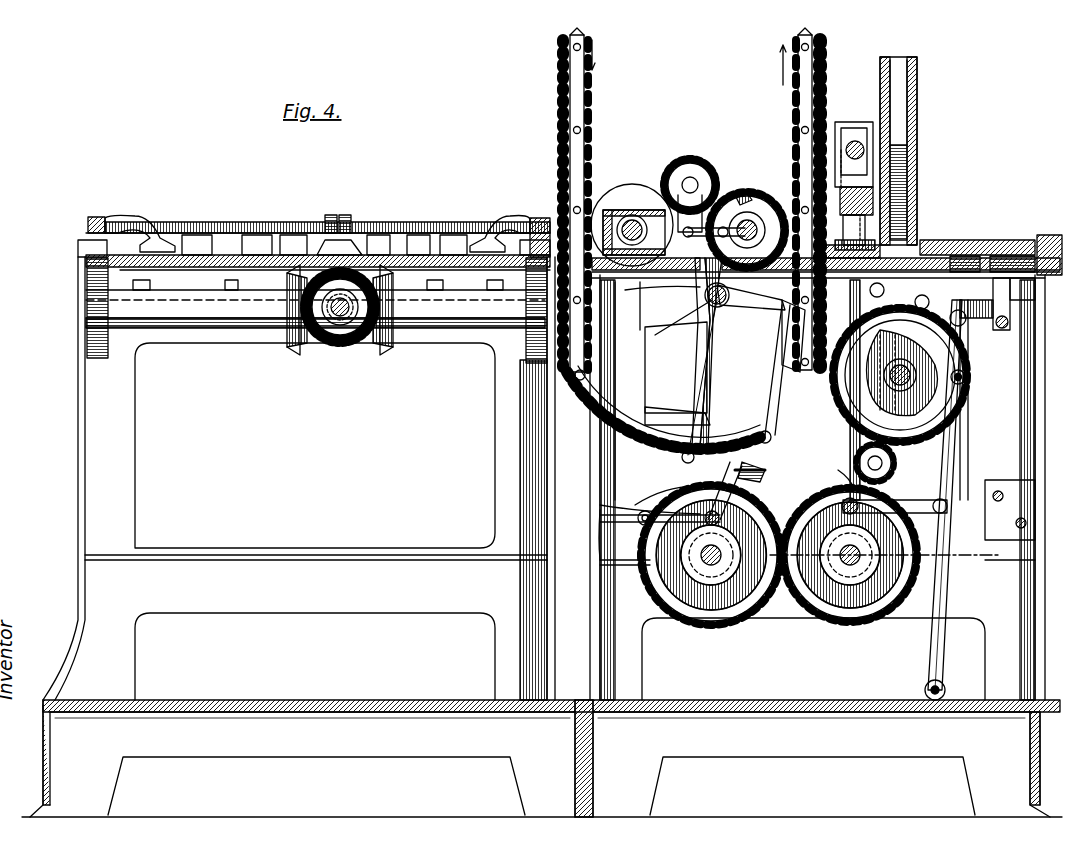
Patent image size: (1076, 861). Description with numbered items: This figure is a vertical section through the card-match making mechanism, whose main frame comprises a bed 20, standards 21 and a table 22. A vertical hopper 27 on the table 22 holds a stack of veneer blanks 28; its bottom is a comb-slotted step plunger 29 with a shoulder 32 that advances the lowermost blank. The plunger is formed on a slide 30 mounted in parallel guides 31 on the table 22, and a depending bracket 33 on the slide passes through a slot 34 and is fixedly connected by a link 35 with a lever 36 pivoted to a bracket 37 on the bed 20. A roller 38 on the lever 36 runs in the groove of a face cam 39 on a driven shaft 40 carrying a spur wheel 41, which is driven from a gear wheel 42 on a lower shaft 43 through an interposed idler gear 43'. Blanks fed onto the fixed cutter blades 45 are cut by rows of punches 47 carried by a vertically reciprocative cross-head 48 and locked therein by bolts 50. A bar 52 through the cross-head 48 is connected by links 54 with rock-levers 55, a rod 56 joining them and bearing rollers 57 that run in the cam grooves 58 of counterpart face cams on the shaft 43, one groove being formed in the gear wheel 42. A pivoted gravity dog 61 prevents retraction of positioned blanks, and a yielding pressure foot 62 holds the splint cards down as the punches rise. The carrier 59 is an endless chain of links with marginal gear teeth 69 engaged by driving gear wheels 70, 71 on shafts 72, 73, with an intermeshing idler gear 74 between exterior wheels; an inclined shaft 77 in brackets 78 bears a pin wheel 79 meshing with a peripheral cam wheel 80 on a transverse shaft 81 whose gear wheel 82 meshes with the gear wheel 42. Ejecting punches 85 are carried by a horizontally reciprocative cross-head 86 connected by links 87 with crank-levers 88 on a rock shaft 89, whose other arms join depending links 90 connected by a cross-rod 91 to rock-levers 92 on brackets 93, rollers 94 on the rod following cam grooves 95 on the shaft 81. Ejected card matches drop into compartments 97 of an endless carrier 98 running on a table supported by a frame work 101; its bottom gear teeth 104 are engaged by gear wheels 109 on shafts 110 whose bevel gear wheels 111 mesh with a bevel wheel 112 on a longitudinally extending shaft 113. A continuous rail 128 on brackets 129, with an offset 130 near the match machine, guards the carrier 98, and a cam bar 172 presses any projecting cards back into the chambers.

The bed 20 is at (542, 758).
The standards 21 is at (817, 487).
The table 22 is at (1055, 240).
The vertical hopper 27 is at (917, 102).
The veneer blanks 28 is at (898, 148).
The step plunger 29 is at (905, 257).
The slide 30 is at (945, 242).
The parallel guides 31 is at (1035, 260).
The shoulder 32 is at (902, 265).
The depending bracket 33 is at (1005, 305).
The slot 34 is at (965, 262).
The link 35 is at (990, 312).
The lever 36 is at (962, 440).
The bracket 37 is at (925, 690).
The roller 38 is at (940, 397).
The face cam 39 is at (900, 375).
The driven shaft 40 is at (912, 360).
The spur wheel 41 is at (838, 395).
The gear wheel 42 is at (880, 595).
The lower shaft 43 is at (827, 592).
The idler gear 43' is at (946, 495).
The cutter blades 45 is at (808, 278).
The punches 47 is at (862, 222).
The cross-head 48 is at (884, 130).
The bolts 50 is at (875, 195).
The bar 52 is at (857, 135).
The links 54 is at (858, 458).
The rock-levers 55 is at (910, 500).
The rod 56 is at (885, 539).
The rollers 57 is at (831, 481).
The cam grooves 58 is at (865, 590).
The carrier 59 is at (565, 92).
The gravity dog 61 is at (870, 245).
The yielding pressure foot 62 is at (793, 212).
The gear teeth 69 is at (585, 100).
The driving gear wheel 70 is at (748, 200).
The driving gear wheel 71 is at (637, 207).
The shaft 72 is at (760, 212).
The shaft 73 is at (656, 391).
The idler gear 74 is at (692, 165).
The inclined shaft 77 is at (713, 363).
The brackets 78 is at (681, 377).
The pin wheel 79 is at (752, 474).
The peripheral cam wheel 80 is at (740, 500).
The transverse shaft 81 is at (700, 570).
The gear wheel 82 is at (713, 590).
The ejecting punches 85 is at (598, 220).
The cross-head 86 is at (662, 225).
The links 87 is at (718, 222).
The crank-levers 88 is at (705, 293).
The rock shaft 89 is at (712, 303).
The depending links 90 is at (755, 380).
The cross-rod 91 is at (725, 514).
The rock-levers 92 is at (660, 522).
The brackets 93 is at (700, 518).
The rollers 94 is at (680, 492).
The cam grooves 95 is at (690, 560).
The compartments 97 is at (245, 233).
The endless carrier 98 is at (400, 240).
The frame work 101 is at (299, 478).
The gear teeth 104 is at (86, 262).
The gear wheels 109 is at (87, 340).
The shafts 110 is at (210, 300).
The bevel gear wheels 111 is at (290, 320).
The bevel wheel 112 is at (330, 345).
The longitudinally-extending shaft 113 is at (345, 318).
The continuous rail 128 is at (88, 223).
The brackets 129 is at (135, 217).
The offset 130 is at (548, 240).
The cam bar 172 is at (532, 250).